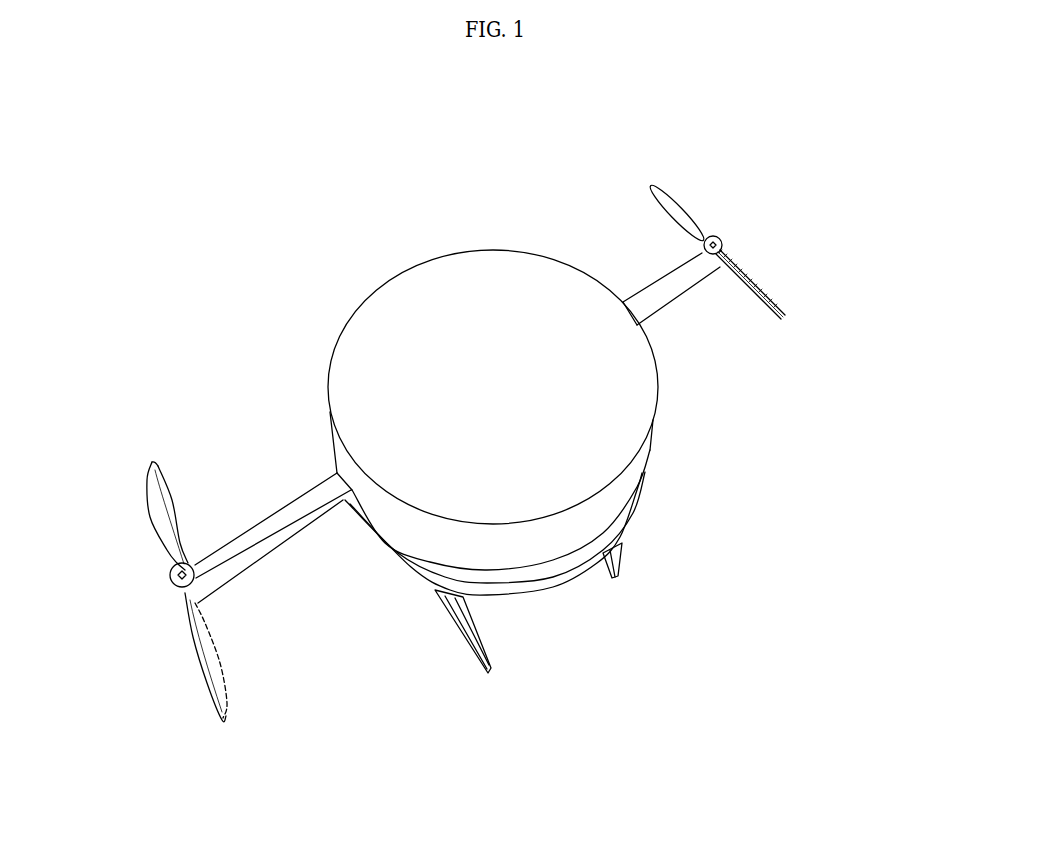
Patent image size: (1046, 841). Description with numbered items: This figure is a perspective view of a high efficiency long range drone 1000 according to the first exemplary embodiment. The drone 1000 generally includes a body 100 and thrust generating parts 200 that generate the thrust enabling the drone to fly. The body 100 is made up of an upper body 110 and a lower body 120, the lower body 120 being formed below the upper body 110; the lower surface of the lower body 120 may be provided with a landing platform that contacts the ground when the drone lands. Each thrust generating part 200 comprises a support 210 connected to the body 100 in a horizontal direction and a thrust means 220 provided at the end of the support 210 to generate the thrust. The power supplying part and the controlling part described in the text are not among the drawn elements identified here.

The high efficiency long range drone 1000 is at (542, 206).
The body 100 is at (422, 385).
The upper body 110 is at (637, 473).
The lower body 120 is at (608, 548).
The thrust generating part 200 is at (160, 565).
The support 210 is at (655, 306).
The thrust means 220 is at (722, 246).